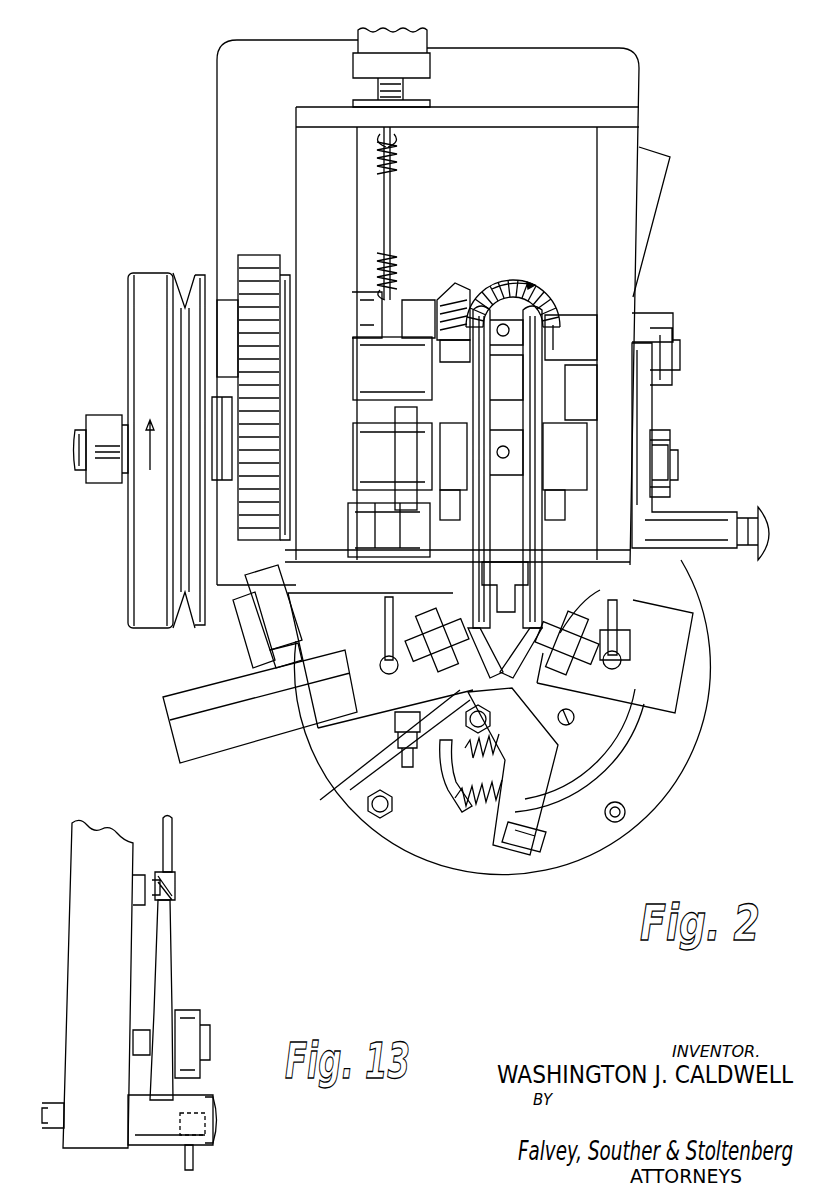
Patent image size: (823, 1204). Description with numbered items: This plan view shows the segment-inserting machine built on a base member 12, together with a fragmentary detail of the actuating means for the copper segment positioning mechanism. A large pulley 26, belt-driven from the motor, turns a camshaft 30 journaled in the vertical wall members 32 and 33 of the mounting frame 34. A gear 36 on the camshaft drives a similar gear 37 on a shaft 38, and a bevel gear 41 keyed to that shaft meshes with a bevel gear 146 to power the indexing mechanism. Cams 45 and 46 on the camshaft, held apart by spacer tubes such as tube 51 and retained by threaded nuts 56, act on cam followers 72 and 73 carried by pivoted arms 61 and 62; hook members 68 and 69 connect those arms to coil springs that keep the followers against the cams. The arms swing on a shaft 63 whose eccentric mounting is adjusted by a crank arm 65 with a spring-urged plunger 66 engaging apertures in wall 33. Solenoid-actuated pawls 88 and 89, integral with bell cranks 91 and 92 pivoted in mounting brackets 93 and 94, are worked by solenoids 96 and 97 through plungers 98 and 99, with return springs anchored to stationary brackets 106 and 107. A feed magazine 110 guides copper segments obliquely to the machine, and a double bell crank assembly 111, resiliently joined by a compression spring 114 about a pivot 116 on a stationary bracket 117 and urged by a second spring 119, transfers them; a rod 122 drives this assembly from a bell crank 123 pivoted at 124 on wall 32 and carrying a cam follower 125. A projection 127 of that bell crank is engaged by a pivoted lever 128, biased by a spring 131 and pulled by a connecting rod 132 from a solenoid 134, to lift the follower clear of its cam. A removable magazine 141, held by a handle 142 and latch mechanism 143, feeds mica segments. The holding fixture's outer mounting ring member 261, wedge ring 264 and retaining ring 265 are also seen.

In FIG. 2, the base member 12 is at (215, 86).
In FIG. 2, the large pulley 26 is at (148, 287).
In FIG. 2, the camshaft 30 is at (680, 462).
In FIG. 2, the vertical wall member 32 is at (297, 145).
In FIG. 13, the vertical wall member 32 is at (78, 850).
In FIG. 2, the vertical wall member 33 is at (628, 144).
In FIG. 2, the mounting frame 34 is at (560, 118).
In FIG. 2, the gear 36 is at (268, 422).
In FIG. 2, the gear 37 is at (264, 300).
In FIG. 2, the shaft 38 is at (600, 322).
In FIG. 2, the bevel gear 41 is at (452, 292).
In FIG. 2, the cam 45 is at (438, 510).
In FIG. 2, the cam 46 is at (562, 511).
In FIG. 2, the spacer tube 51 is at (362, 471).
In FIG. 2, the threaded nut 56 is at (100, 418).
In FIG. 2, the pivoted arm 61 is at (494, 292).
In FIG. 2, the pivoted arm 62 is at (537, 298).
In FIG. 2, the shaft 63 is at (363, 367).
In FIG. 2, the crank arm 65 is at (645, 397).
In FIG. 2, the spring-urged plunger 66 is at (746, 515).
In FIG. 2, the hook member 68 is at (469, 298).
In FIG. 2, the hook member 69 is at (556, 310).
In FIG. 2, the cam follower 72 is at (452, 430).
In FIG. 2, the cam follower 73 is at (565, 477).
In FIG. 2, the solenoid-actuated pawl 88 is at (466, 603).
In FIG. 2, the solenoid-actuated pawl 89 is at (537, 620).
In FIG. 2, the bell crank 91 is at (390, 700).
In FIG. 2, the bell crank 92 is at (580, 612).
In FIG. 2, the mounting bracket 93 is at (400, 707).
In FIG. 2, the mounting bracket 94 is at (571, 608).
In FIG. 2, the solenoid 96 is at (312, 690).
In FIG. 2, the solenoid 97 is at (655, 675).
In FIG. 2, the actuating plunger 98 is at (382, 657).
In FIG. 2, the actuating plunger 99 is at (595, 657).
In FIG. 2, the stationary bracket 106 is at (384, 606).
In FIG. 2, the stationary bracket 107 is at (615, 620).
In FIG. 2, the feed magazine 110 is at (648, 233).
In FIG. 2, the double bell crank assembly 111 is at (438, 766).
In FIG. 2, the compression spring 114 is at (493, 757).
In FIG. 2, the pivot 116 is at (485, 720).
In FIG. 2, the stationary bracket 117 is at (512, 850).
In FIG. 2, the second spring 119 is at (466, 818).
In FIG. 2, the rod 122 is at (415, 708).
In FIG. 13, the rod 122 is at (192, 1160).
In FIG. 2, the bell crank 123 is at (350, 530).
In FIG. 13, the bell crank 123 is at (197, 1102).
In FIG. 13, the pivot 124 is at (216, 1122).
In FIG. 13, the cam follower 125 is at (190, 1015).
In FIG. 2, the integral projection 127 is at (378, 413).
In FIG. 13, the integral projection 127 is at (163, 960).
In FIG. 2, the pivoted lever 128 is at (385, 306).
In FIG. 13, the pivoted lever 128 is at (175, 898).
In FIG. 2, the spring 131 is at (398, 157).
In FIG. 13, the connecting rod 132 is at (173, 845).
In FIG. 2, the solenoid 134 is at (366, 42).
In FIG. 2, the removable magazine 141 is at (167, 716).
In FIG. 2, the handle 142 is at (248, 633).
In FIG. 2, the latch mechanism 143 is at (290, 666).
In FIG. 2, the bevel gear 146 is at (516, 282).
In FIG. 2, the outer mounting ring member 261 is at (672, 764).
In FIG. 2, the wedge ring 264 is at (625, 725).
In FIG. 2, the ring 265 is at (606, 760).